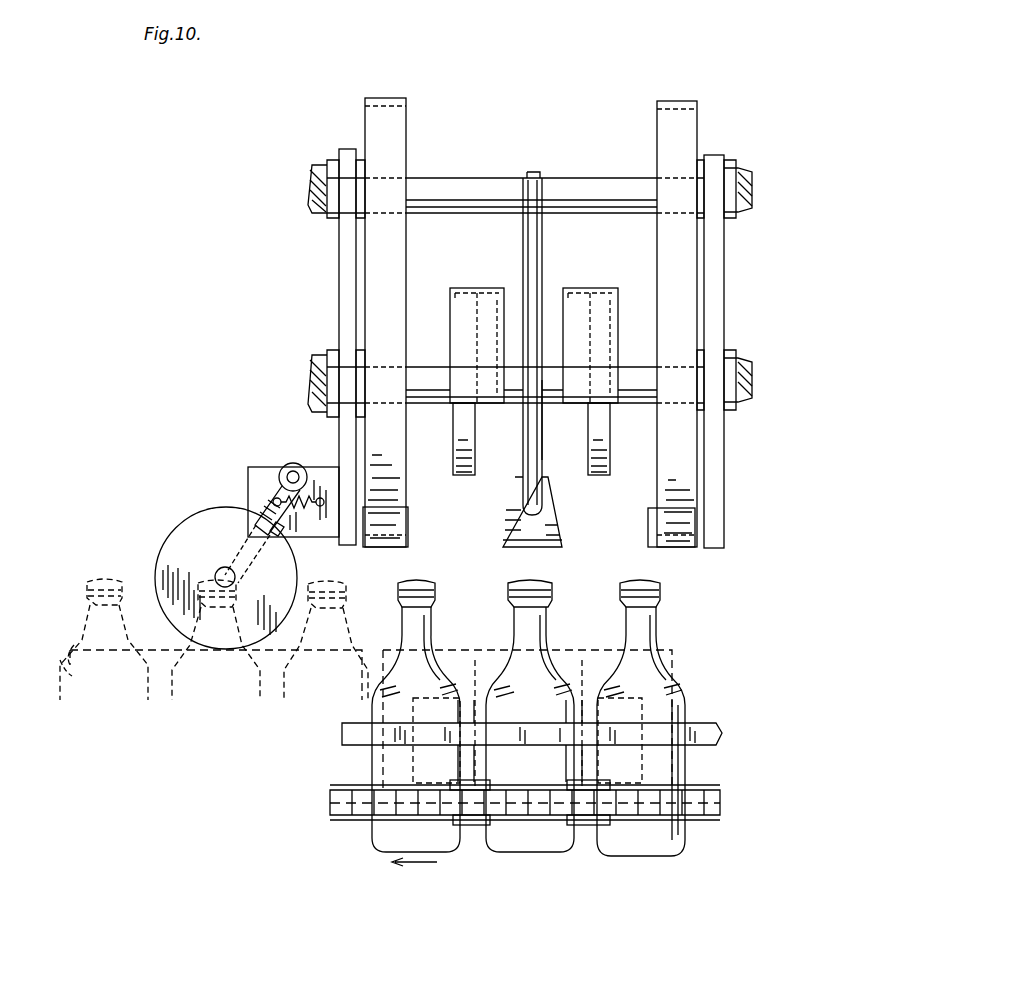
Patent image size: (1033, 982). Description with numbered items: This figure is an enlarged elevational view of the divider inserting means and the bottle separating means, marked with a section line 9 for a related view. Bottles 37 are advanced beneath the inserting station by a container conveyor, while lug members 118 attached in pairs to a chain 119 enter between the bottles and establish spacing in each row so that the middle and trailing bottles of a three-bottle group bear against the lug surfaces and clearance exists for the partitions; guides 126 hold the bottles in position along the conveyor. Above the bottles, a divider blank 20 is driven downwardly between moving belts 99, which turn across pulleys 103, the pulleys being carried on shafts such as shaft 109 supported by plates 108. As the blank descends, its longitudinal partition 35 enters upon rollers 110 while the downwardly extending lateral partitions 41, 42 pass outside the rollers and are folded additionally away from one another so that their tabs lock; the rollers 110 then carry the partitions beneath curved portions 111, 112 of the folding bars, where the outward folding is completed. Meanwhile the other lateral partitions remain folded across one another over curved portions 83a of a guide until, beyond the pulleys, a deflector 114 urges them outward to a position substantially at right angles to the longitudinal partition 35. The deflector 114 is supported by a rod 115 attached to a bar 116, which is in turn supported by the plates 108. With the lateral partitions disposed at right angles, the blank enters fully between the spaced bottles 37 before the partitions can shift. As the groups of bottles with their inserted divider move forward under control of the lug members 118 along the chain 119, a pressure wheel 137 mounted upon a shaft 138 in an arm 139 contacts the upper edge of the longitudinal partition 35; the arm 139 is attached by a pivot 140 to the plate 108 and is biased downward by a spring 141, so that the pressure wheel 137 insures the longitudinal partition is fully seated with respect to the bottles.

The section line 9- 9 is at (505, 83).
The divider blank 20 is at (292, 660).
The longitudinal partition 35 is at (65, 650).
The bottles 37 is at (98, 620).
The lateral partition 41 is at (476, 700).
The lateral partition 42 is at (590, 705).
The curved portions of guide 83a is at (540, 444).
The moving belts 99 is at (392, 505).
The pulleys 103 is at (410, 530).
The plates 108 is at (340, 266).
The shaft 109 is at (432, 392).
The rollers 110 is at (478, 456).
The curved portion of folding bar 111 is at (614, 286).
The curved portion of folding bar 112 is at (484, 286).
The deflector 114 is at (524, 547).
The rod 115 is at (538, 275).
The bar 116 is at (470, 185).
The lug members 118 is at (470, 825).
The chain 119 is at (712, 815).
The guides 126 is at (716, 736).
The pressure wheel 137 is at (222, 556).
The shaft 138 is at (236, 578).
The arm 139 is at (272, 478).
The pivot 140 is at (293, 476).
The spring 141 is at (304, 508).